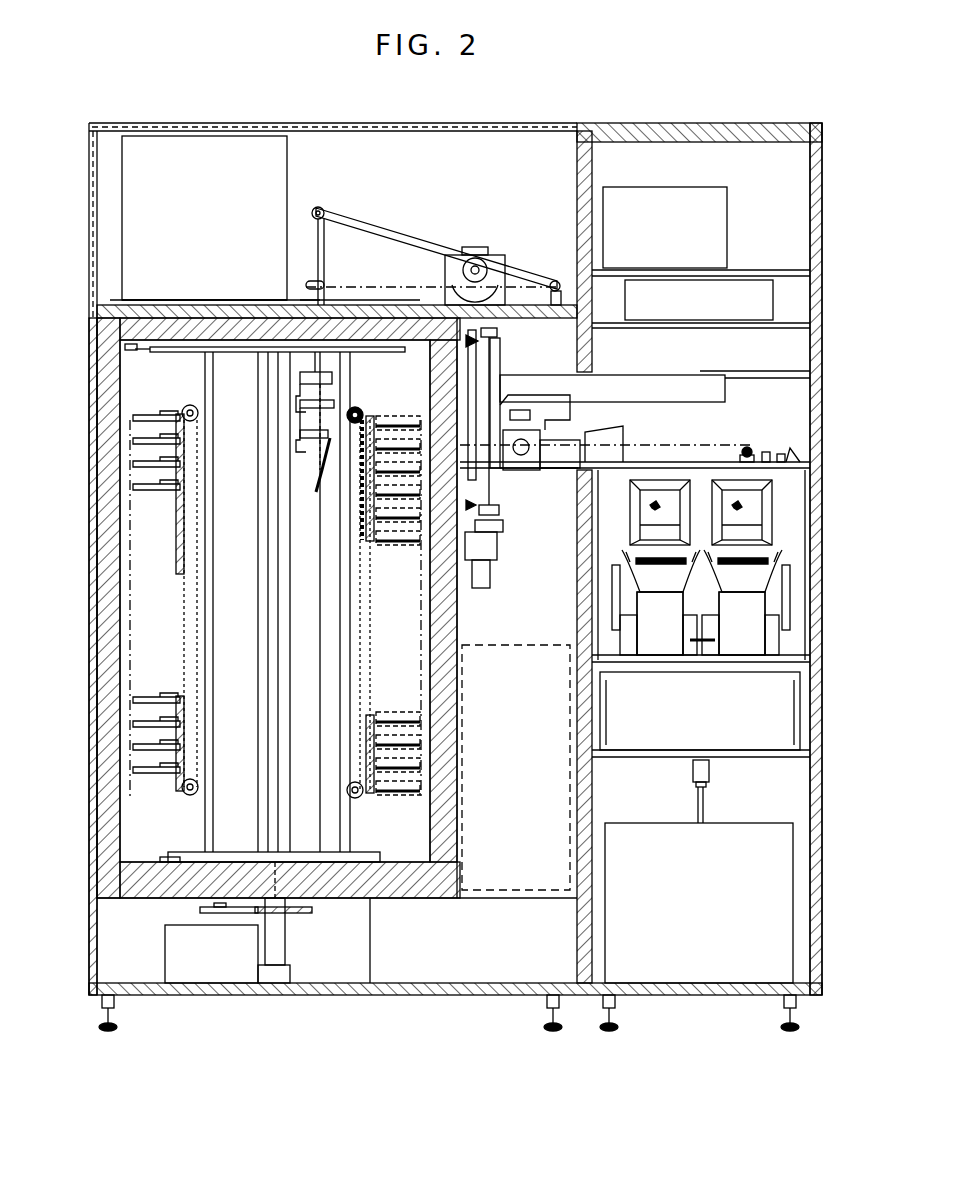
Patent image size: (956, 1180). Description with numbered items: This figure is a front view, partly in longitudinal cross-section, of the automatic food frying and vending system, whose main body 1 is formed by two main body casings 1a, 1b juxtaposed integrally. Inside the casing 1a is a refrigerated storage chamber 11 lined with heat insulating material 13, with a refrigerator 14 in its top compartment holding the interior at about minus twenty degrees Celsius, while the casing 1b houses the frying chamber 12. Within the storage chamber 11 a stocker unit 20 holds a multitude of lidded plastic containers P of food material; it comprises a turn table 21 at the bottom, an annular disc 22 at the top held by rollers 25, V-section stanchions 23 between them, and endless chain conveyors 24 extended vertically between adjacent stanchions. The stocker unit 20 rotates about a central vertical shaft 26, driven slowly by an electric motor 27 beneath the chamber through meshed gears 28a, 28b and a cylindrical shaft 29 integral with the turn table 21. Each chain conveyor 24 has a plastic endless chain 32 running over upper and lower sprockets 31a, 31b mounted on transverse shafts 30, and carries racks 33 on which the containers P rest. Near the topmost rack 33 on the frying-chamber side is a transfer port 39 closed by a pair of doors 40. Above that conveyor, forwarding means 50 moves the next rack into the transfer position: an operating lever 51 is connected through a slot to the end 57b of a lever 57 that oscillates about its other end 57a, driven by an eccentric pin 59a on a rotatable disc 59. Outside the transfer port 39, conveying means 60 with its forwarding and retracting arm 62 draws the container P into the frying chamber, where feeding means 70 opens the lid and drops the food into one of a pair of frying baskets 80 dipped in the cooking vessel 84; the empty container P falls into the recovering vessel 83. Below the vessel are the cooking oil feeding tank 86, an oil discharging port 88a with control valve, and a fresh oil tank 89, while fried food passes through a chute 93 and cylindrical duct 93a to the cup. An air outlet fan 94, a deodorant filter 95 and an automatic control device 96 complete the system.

The main body 1 is at (256, 124).
The main body casing 1a is at (89, 380).
The main body casing 1b is at (812, 350).
The refrigerated storage chamber 11 is at (130, 610).
The frying chamber 12 is at (793, 541).
The heat insulating material 13 is at (104, 680).
The refrigerator 14 is at (130, 240).
The stocker unit 20 is at (145, 456).
The turn table 21 is at (172, 855).
The annular disc 22 is at (233, 356).
The stanchions 23 is at (195, 824).
The endless chain conveyors 24 is at (185, 512).
The rollers 25 is at (150, 349).
The vertical shaft 26 is at (270, 690).
The electric motor 27 is at (196, 968).
The meshed gear 28a is at (200, 912).
The meshed gear 28b is at (318, 912).
The cylindrical shaft 29 is at (275, 952).
The transverse shafts 30 is at (338, 820).
The upper sprocket 31a is at (194, 422).
The lower sprocket 31b is at (198, 786).
The endless chain 32 is at (362, 528).
The racks 33 is at (165, 490).
The transfer port 39 is at (420, 340).
The doors 40 is at (478, 465).
The forwarding means 50 is at (300, 384).
The operating lever 51 is at (300, 247).
The lever 57 is at (400, 235).
The lever end 57a is at (548, 283).
The lever end 57b is at (322, 212).
The rotatable disc 59 is at (470, 256).
The eccentric pin 59a is at (490, 248).
The conveying means 60 is at (620, 376).
The forwarding and retracting arm 62 is at (578, 405).
The feeding means 70 is at (553, 476).
The frying basket 80 is at (760, 514).
The empty container recovering vessel 83 is at (508, 660).
The cooking vessel 84 is at (790, 606).
The cooking oil feeding tank 86 is at (780, 724).
The oil discharging port 88a is at (706, 797).
The fresh oil tank 89 is at (778, 872).
The chute 93 is at (762, 582).
The cylindrical duct 93a is at (660, 635).
The air outlet fan 94 is at (725, 215).
The deodorant filter 95 is at (773, 300).
The automatic control device 96 is at (448, 966).
The plastic container P is at (368, 540).